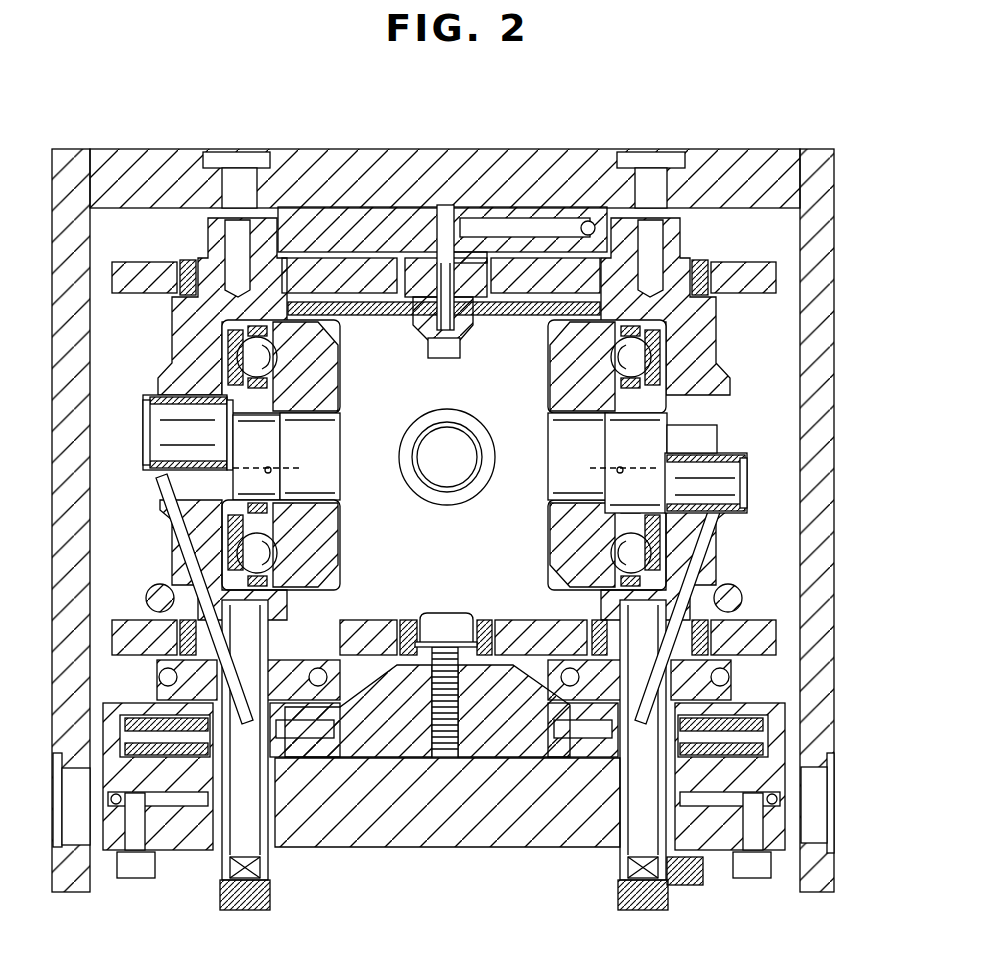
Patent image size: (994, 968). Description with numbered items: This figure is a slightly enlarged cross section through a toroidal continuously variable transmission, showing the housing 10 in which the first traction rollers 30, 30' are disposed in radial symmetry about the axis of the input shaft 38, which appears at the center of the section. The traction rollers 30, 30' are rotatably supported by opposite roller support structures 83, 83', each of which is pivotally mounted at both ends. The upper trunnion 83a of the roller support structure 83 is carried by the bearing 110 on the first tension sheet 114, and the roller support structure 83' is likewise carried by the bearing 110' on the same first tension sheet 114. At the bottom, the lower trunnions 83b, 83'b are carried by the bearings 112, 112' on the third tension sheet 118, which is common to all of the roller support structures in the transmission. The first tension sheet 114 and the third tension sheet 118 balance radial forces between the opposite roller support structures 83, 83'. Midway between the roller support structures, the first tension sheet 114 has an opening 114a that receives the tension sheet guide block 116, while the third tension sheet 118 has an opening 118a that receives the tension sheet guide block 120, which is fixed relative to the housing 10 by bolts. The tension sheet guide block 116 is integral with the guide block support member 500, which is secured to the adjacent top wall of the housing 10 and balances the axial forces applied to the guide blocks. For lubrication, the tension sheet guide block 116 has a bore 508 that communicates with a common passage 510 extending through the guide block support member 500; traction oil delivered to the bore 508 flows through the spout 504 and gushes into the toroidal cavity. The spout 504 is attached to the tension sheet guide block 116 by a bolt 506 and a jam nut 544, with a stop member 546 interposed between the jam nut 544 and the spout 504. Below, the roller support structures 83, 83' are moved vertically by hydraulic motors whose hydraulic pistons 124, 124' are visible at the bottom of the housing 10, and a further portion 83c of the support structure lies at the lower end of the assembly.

The housing 10 is at (832, 235).
The guide block support member 500 is at (340, 207).
The bore 508 is at (441, 205).
The opening 114a is at (478, 250).
The common passage 510 is at (543, 228).
The first tension sheet 114 is at (123, 262).
The bearing 110' is at (171, 255).
The upper trunnion 83a is at (690, 270).
The bearing 110 is at (751, 258).
The roller support structure 83' is at (199, 306).
The roller support structure 83 is at (690, 306).
The tension sheet guide block 116 is at (388, 314).
The jam nut 544 is at (490, 298).
The spout 504 is at (470, 335).
The stop member 546 is at (340, 336).
The first traction roller 30' is at (334, 368).
The bolt 506 is at (447, 358).
The first traction roller 30 is at (554, 366).
The input shaft 38 is at (432, 470).
The third tension sheet 118 is at (128, 620).
The bearing 112' is at (369, 611).
The tension sheet guide block 120 is at (408, 620).
The opening 118a is at (473, 618).
The bearing 112 is at (627, 577).
The lower trunnion 83'b is at (218, 769).
The lower trunnion 83b is at (730, 660).
The hydraulic piston 124' is at (361, 818).
The hydraulic piston 124 is at (533, 806).
The right housing bolt 83c is at (700, 885).